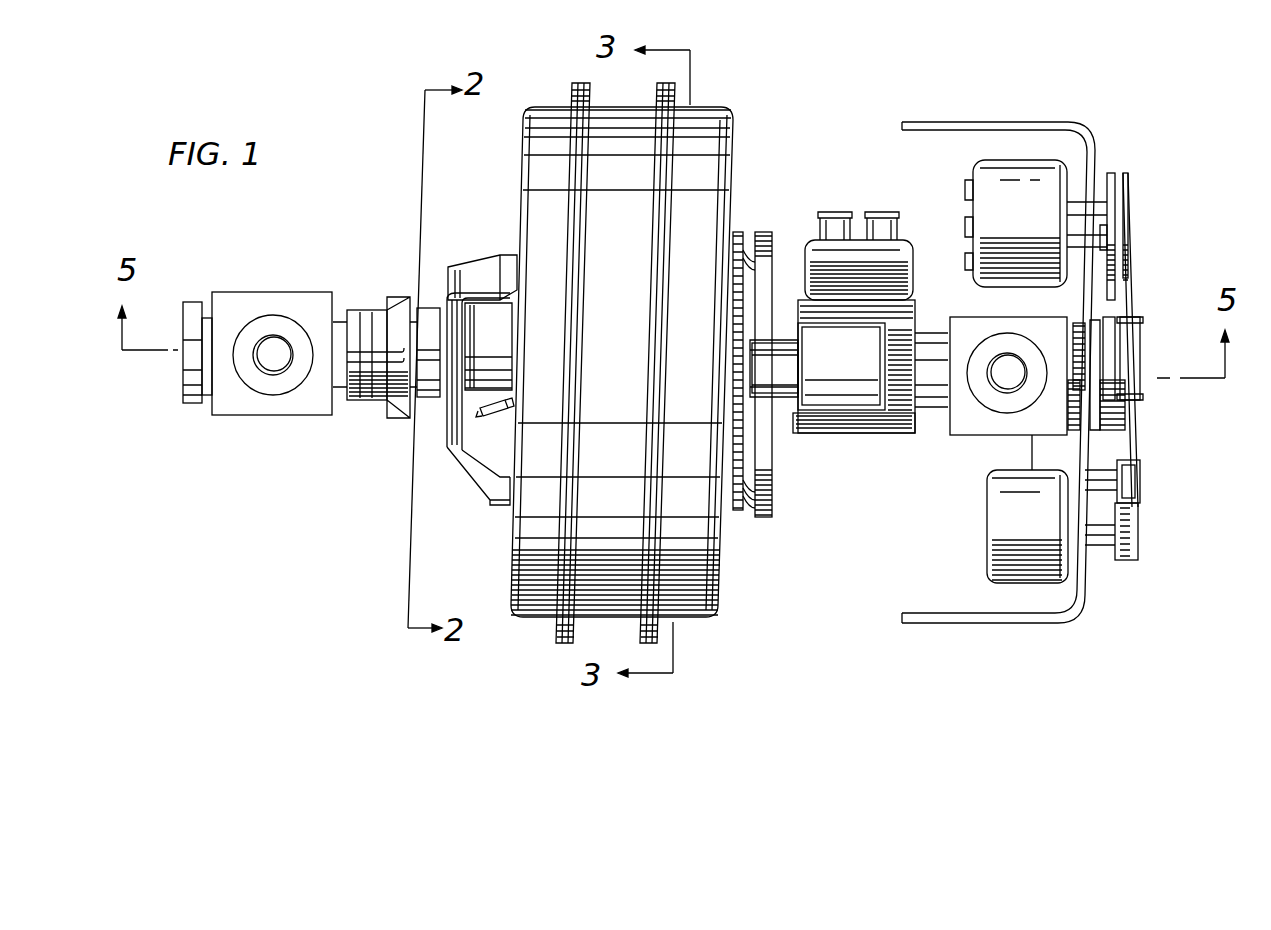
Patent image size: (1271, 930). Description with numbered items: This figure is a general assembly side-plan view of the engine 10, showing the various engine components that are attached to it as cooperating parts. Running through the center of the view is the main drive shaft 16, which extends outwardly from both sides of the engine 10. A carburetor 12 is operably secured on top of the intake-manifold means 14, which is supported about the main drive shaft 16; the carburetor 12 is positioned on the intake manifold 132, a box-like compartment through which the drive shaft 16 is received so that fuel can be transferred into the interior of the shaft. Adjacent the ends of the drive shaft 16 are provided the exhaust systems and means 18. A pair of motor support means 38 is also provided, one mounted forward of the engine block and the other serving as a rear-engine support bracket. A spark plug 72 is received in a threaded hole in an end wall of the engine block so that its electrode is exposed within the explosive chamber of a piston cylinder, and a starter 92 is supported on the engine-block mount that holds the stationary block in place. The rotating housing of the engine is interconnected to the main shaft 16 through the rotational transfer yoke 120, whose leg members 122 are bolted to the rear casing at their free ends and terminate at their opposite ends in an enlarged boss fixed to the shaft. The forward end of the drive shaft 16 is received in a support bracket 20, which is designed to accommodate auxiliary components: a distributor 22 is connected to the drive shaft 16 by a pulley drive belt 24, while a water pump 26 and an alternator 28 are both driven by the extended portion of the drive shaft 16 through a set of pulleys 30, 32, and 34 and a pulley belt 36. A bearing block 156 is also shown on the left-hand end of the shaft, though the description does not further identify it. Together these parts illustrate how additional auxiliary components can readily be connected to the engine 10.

The engine 10 is at (788, 112).
The carburetor 12 is at (912, 208).
The intake-manifold means 14 is at (903, 422).
The main drive shaft 16 is at (481, 333).
The exhaust system and means 18 is at (243, 425).
The support bracket 20 is at (1017, 623).
The distributor 22 is at (1017, 160).
The pulley drive belt 24 is at (1123, 290).
The water pump 26 is at (1138, 445).
The alternator 28 is at (987, 522).
The pulley 30 is at (1140, 347).
The pulley 32 is at (1140, 480).
The pulley 34 is at (1140, 520).
The pulley belt 36 is at (1137, 410).
The motor support means 38 is at (385, 413).
The spark plug 72 is at (742, 233).
The starter 92 is at (850, 353).
The rotational transfer yoke 120 is at (437, 473).
The leg member 122 is at (462, 273).
The intake manifold 132 is at (861, 440).
The bearing 156 is at (292, 293).